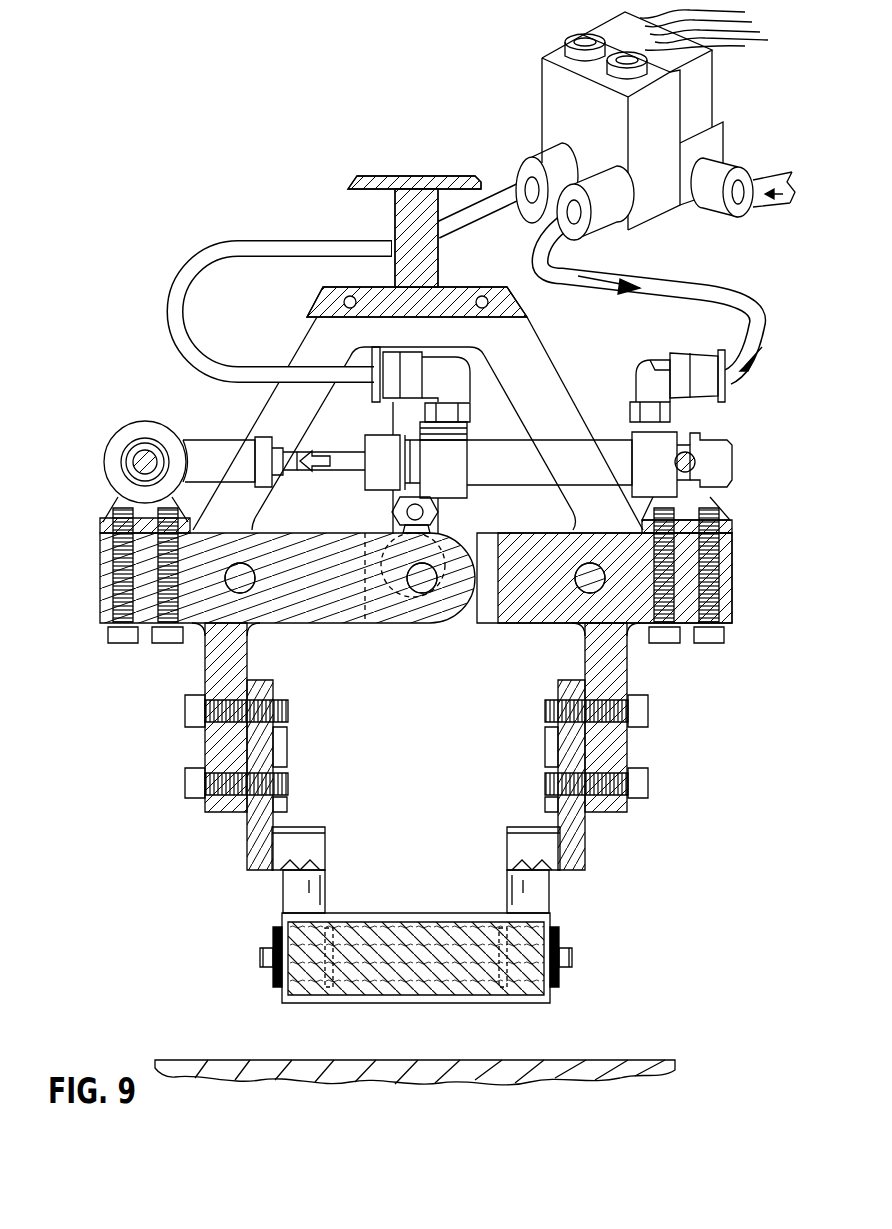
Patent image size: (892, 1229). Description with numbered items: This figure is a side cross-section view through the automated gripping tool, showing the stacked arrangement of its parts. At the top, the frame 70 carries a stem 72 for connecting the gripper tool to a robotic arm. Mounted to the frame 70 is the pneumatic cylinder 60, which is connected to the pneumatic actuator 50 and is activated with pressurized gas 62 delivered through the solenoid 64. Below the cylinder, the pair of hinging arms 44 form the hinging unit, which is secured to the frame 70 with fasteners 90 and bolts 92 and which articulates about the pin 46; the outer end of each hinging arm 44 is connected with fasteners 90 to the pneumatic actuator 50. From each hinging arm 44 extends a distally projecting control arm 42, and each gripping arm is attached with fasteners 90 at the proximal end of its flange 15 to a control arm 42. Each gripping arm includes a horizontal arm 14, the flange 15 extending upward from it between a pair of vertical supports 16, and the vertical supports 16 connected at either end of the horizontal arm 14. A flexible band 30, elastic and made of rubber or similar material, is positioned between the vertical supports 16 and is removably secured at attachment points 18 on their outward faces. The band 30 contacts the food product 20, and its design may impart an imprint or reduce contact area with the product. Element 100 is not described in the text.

The horizontal arm 14 is at (318, 847).
The flange 15 is at (250, 827).
The vertical support 16 is at (287, 892).
The attachment point 18 is at (262, 962).
The food product 20 is at (472, 1003).
The flexible band 30 is at (275, 930).
The control arm 42 is at (213, 675).
The hinging arm 44 is at (322, 613).
The pin 46 is at (418, 593).
The pneumatic actuator 50 is at (148, 420).
The pneumatic cylinder 60 is at (593, 453).
The pressurized gas 62 is at (687, 355).
The solenoid 64 is at (595, 162).
The frame 70 is at (527, 365).
The stem 72 is at (408, 176).
The fastener 90 is at (270, 767).
The bolt 92 is at (157, 648).
The base plate 100 is at (677, 1076).